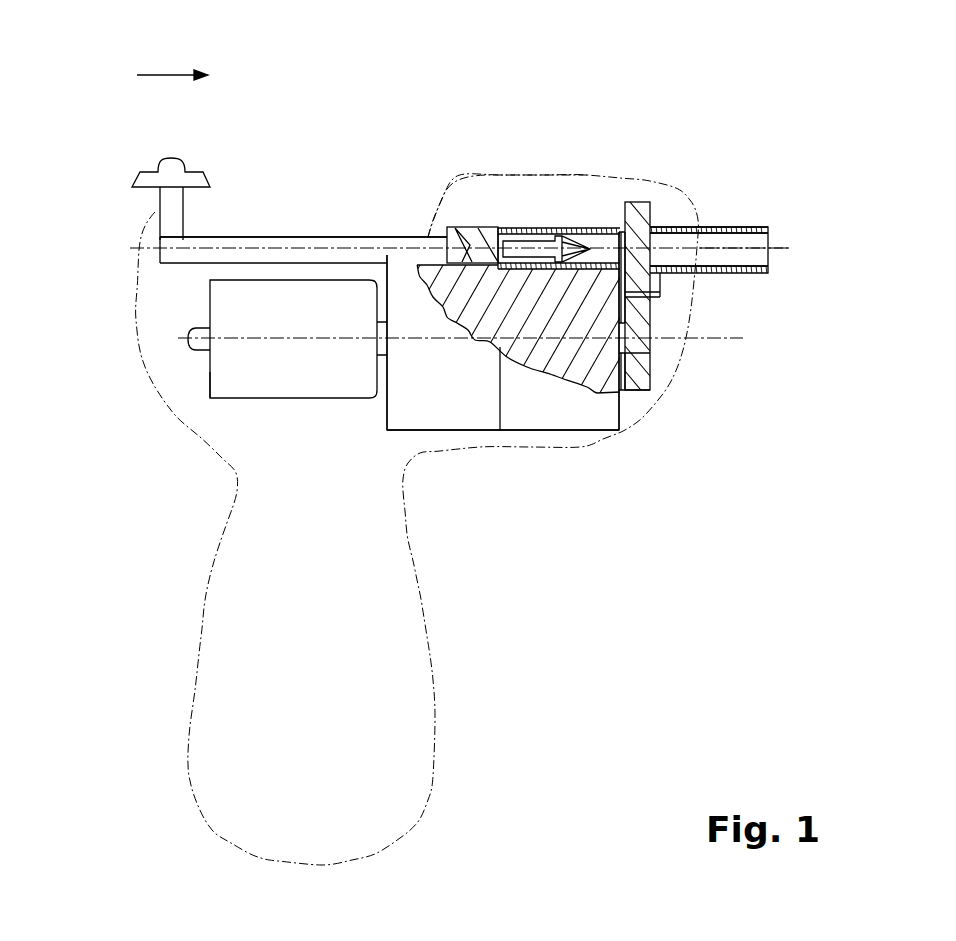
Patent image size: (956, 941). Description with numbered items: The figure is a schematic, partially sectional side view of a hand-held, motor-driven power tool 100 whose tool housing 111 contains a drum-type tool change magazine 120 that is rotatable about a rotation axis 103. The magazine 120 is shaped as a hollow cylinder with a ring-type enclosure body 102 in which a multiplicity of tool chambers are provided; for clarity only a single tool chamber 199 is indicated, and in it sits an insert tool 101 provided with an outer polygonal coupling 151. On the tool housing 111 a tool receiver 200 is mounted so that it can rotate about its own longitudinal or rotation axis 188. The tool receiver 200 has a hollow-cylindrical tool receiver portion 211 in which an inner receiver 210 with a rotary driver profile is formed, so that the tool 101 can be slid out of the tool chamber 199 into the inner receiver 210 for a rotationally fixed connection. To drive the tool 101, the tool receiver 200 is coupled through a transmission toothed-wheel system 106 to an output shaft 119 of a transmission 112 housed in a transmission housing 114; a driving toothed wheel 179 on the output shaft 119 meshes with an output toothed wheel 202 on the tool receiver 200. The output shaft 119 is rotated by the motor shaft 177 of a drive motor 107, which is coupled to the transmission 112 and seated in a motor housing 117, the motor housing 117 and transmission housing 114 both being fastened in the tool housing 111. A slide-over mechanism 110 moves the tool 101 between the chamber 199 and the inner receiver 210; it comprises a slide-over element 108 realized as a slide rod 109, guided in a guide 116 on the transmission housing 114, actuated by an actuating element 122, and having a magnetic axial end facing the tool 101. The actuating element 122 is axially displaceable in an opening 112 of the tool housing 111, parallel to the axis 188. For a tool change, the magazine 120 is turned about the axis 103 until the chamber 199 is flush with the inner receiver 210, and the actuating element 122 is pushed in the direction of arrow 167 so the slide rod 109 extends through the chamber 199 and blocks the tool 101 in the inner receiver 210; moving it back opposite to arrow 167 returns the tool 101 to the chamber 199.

The power tool 100 is at (140, 713).
The insert tool 101 is at (552, 226).
The ring-type enclosure body 102 is at (553, 410).
The rotation axis 103 is at (735, 340).
The transmission toothed-wheel system 106 is at (627, 293).
The drive motor 107 is at (247, 385).
The slide-over element 108 is at (281, 224).
The slide rod 109 is at (237, 247).
The slide-over mechanism 110 is at (318, 208).
The tool housing 111 is at (478, 160).
The transmission 112 is at (420, 210).
The transmission housing 114 is at (386, 416).
The guide 116 is at (473, 227).
The motor housing 117 is at (210, 372).
The output shaft 119 is at (620, 330).
The drum-type tool change magazine 120 is at (634, 417).
The actuating element 122 is at (172, 158).
The outer polygonal coupling 151 is at (527, 228).
The arrow 167 is at (160, 75).
The motor shaft 177 is at (385, 327).
The driving toothed wheel 179 is at (640, 380).
The rotation axis 188 is at (782, 247).
The tool chamber 199 is at (608, 240).
The tool receiver 200 is at (734, 209).
The output toothed wheel 202 is at (640, 207).
The inner receiver 210 is at (738, 255).
The tool receiver portion 211 is at (755, 227).